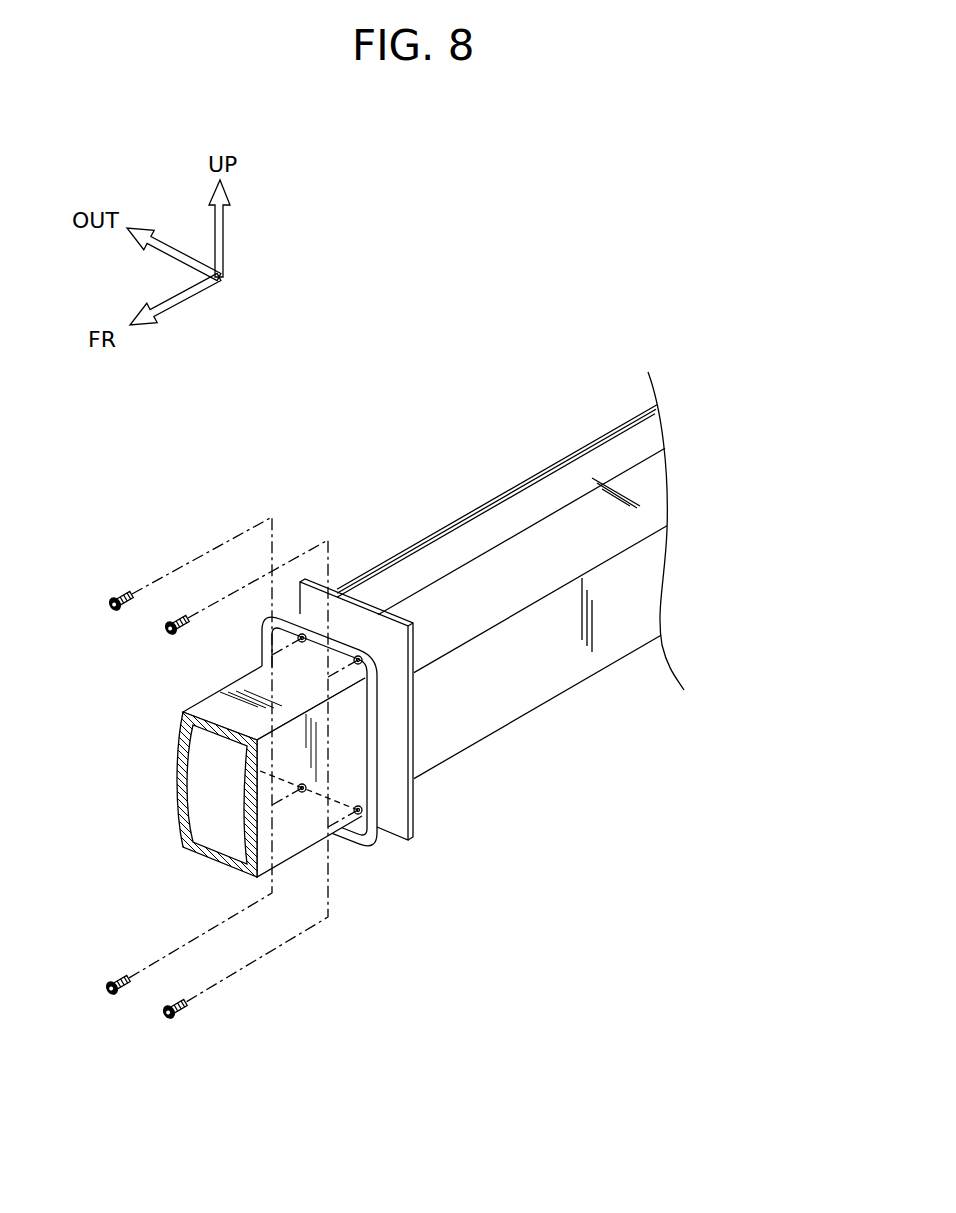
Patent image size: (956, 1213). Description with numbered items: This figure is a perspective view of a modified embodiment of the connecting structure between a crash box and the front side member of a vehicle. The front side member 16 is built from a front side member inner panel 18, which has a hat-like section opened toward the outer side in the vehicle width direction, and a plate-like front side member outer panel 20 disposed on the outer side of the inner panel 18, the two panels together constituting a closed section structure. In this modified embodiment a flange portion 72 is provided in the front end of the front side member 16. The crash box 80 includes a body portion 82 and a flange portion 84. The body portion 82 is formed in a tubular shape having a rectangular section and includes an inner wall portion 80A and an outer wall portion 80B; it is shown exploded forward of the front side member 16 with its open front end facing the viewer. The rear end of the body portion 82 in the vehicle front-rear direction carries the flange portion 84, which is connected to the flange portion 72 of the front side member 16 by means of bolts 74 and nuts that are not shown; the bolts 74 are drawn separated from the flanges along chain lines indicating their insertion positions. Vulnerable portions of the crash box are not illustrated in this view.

The front side member 16 is at (527, 447).
The front side member inner panel 18 is at (563, 673).
The front side member outer panel 20 is at (571, 447).
The flange portion 72 is at (362, 598).
The bolt 74 is at (117, 597).
The crash box 80 is at (176, 699).
The inner wall portion 80A is at (295, 832).
The outer wall portion 80B is at (178, 787).
The body portion 82 is at (245, 677).
The flange portion 84 is at (300, 610).